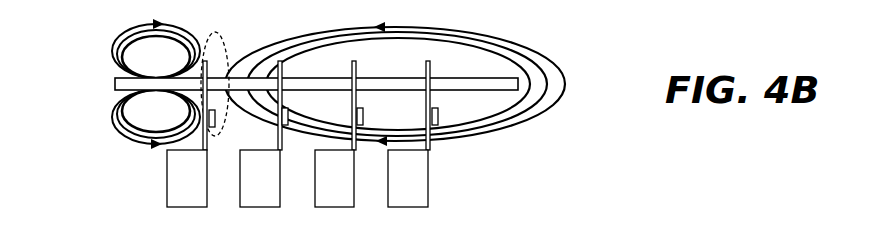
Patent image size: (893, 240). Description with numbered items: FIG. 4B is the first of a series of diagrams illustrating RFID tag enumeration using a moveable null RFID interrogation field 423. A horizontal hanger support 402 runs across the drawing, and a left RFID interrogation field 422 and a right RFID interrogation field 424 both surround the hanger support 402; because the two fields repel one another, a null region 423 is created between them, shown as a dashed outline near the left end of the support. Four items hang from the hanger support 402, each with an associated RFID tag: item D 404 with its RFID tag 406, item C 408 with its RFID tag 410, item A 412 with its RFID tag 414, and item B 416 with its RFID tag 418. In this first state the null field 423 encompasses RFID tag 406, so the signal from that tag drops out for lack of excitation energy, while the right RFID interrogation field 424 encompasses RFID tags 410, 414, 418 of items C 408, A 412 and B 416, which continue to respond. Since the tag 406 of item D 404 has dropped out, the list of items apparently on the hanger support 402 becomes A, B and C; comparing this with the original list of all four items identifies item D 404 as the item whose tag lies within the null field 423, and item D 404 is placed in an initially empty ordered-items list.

The hanger support 402 is at (281, 77).
The item D 404 is at (151, 191).
The RFID tag 406 is at (240, 172).
The item C 408 is at (298, 192).
The RFID tag 410 is at (312, 111).
The item A 412 is at (373, 192).
The RFID tag 414 is at (387, 111).
The item B 416 is at (449, 183).
The RFID tag 418 is at (464, 111).
The left RFID interrogation field 422 is at (116, 78).
The null RFID interrogation field 423 is at (240, 71).
The right RFID interrogation field 424 is at (425, 85).